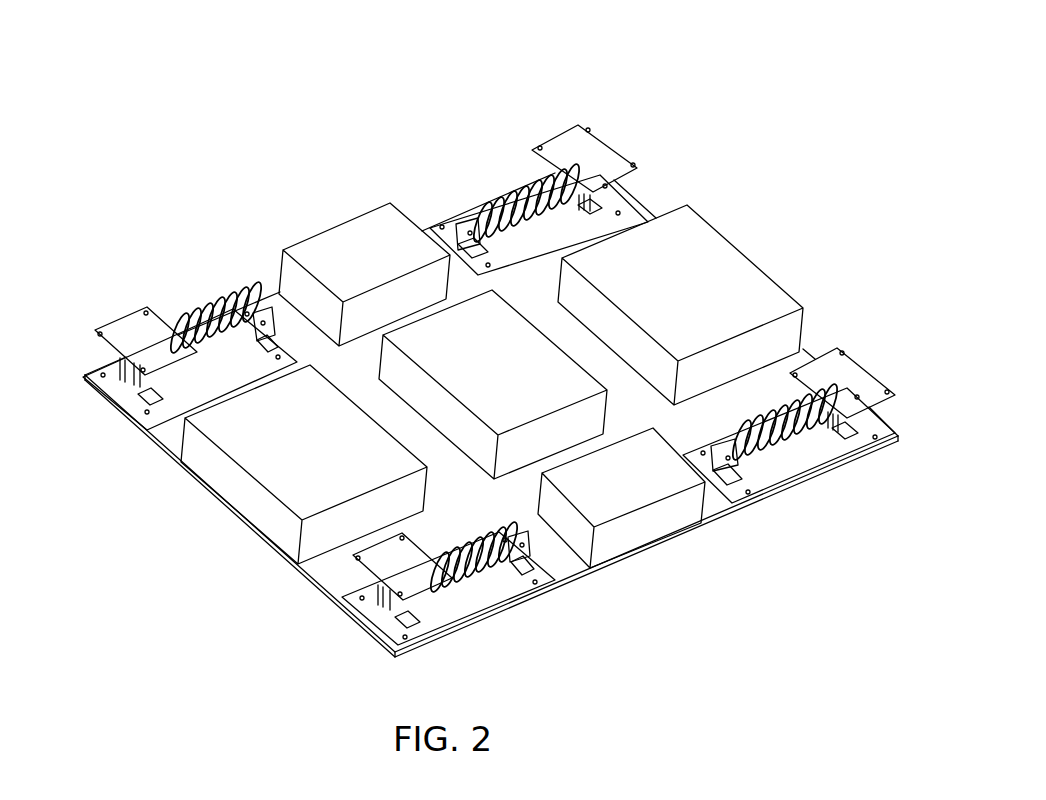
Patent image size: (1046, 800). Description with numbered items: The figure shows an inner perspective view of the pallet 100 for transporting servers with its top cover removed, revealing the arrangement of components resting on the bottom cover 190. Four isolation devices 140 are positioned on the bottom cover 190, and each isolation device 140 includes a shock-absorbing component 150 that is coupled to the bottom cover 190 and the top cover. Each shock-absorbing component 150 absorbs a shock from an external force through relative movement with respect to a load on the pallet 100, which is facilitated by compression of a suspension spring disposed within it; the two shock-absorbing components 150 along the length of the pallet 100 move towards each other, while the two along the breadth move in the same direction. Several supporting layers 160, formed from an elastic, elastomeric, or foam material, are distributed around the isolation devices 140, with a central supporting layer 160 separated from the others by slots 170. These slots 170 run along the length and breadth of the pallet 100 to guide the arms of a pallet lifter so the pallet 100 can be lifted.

The pallet 100 is at (645, 85).
The isolation device 140 is at (177, 327).
The shock-absorbing component 150 is at (222, 318).
The supporting layer 160 is at (532, 370).
The slot 170 is at (391, 417).
The bottom cover 190 is at (573, 575).